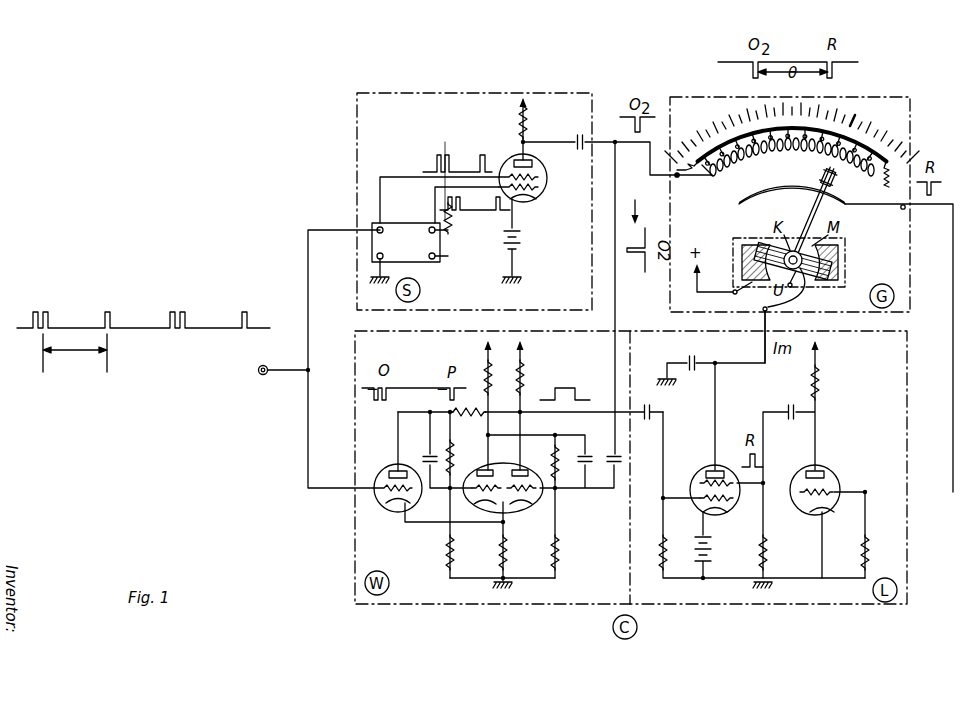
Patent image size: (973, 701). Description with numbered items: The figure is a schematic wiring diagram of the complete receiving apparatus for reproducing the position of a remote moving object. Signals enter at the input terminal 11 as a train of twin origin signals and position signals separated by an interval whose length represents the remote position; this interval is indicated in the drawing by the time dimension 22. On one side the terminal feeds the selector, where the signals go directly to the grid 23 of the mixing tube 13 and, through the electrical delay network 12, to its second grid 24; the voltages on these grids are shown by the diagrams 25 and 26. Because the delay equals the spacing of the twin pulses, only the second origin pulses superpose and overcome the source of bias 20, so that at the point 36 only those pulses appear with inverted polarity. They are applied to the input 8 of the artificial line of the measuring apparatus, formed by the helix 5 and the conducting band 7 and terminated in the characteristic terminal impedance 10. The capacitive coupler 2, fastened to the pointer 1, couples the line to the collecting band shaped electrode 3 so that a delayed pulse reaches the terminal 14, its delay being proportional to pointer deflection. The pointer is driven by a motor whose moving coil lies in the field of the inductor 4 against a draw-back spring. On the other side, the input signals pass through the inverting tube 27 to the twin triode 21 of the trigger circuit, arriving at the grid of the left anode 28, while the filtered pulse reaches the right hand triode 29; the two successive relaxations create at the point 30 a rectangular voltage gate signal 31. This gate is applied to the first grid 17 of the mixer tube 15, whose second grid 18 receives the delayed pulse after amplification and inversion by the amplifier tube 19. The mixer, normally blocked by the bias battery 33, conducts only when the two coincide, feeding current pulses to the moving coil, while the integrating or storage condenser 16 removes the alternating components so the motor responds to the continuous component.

The pointer 1 is at (852, 128).
The capacitive coupler 2 is at (836, 178).
The collecting band shaped electrode 3 is at (762, 198).
The inductor 4 is at (838, 268).
The helix 5 is at (792, 133).
The conducting band 7 is at (745, 132).
The input of the artificial line 8 is at (691, 180).
The characteristic terminal impedance 10 is at (893, 178).
The input terminal 11 is at (280, 382).
The electrical delay network 12 is at (411, 243).
The mixing tube 13 is at (536, 185).
The terminal 14 is at (899, 348).
The mixer tube 15 is at (714, 484).
The integrating or storage condenser 16 is at (686, 360).
The first grid 17 is at (706, 497).
The second grid 18 is at (728, 485).
The amplifier tube 19 is at (816, 506).
The source of bias 20 is at (524, 247).
The twin triode 21 is at (500, 511).
The pulse train period 22 is at (143, 331).
The grid 23 is at (539, 174).
The second grid 24 is at (538, 190).
The diagram 25 is at (457, 177).
The diagram 26 is at (475, 212).
The tube 27 is at (433, 472).
The left anode 28 is at (478, 484).
The right hand triode 29 is at (531, 484).
The point 30 is at (521, 410).
The rectangular voltage gate signal 31 is at (565, 382).
The bias battery 33 is at (712, 547).
The point 36 is at (532, 120).